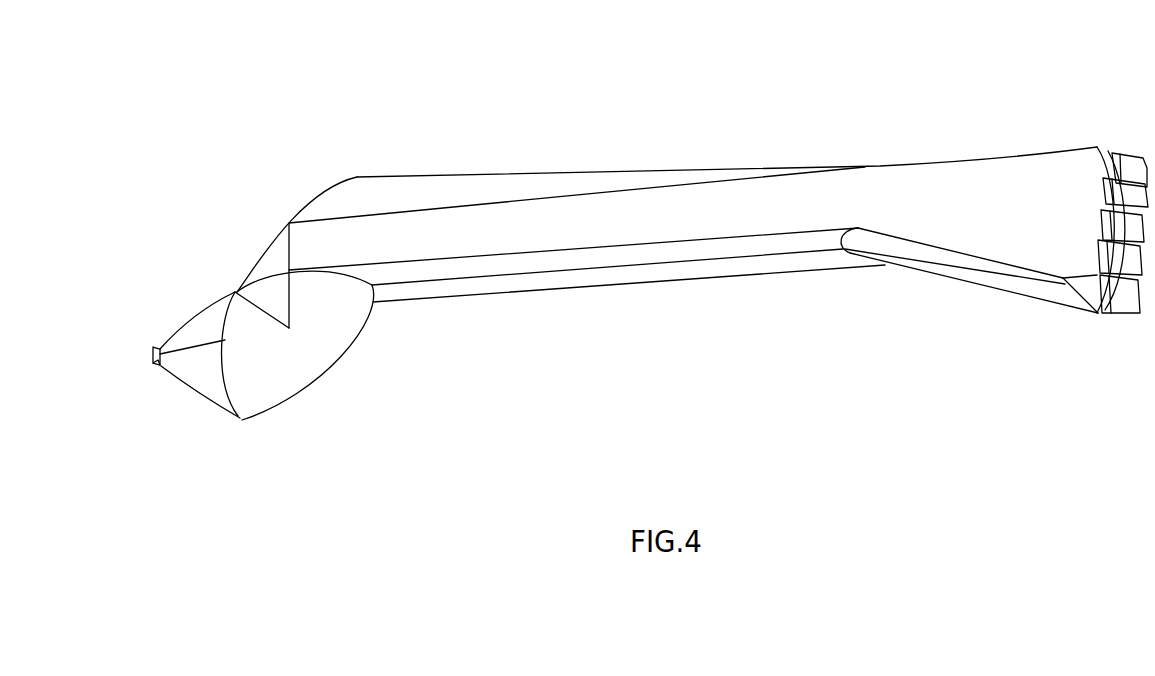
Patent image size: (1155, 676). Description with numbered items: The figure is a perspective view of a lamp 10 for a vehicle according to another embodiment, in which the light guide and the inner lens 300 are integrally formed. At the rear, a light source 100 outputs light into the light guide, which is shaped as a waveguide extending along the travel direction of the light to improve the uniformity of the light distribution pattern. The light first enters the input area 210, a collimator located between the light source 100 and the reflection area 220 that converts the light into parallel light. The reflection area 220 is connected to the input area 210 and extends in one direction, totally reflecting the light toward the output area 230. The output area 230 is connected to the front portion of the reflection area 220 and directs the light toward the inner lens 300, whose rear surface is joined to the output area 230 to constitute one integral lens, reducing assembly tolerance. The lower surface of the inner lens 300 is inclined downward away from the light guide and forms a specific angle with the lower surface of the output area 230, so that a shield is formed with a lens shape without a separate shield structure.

The lamp for a vehicle 10 is at (1075, 64).
The light source 100 is at (156, 366).
The input area 210 is at (207, 385).
The reflection area 220 is at (275, 300).
The output area 230 is at (520, 235).
The inner lens 300 is at (1077, 218).